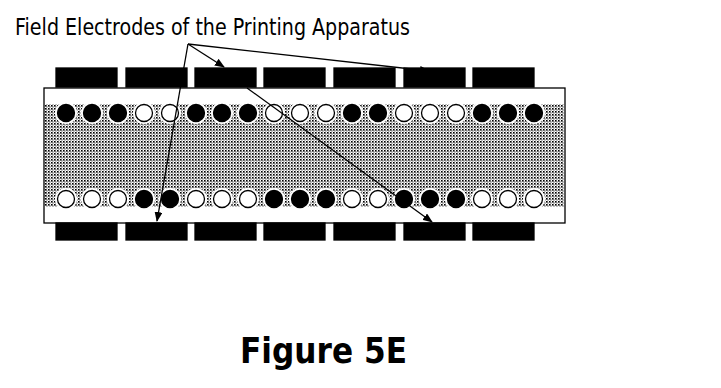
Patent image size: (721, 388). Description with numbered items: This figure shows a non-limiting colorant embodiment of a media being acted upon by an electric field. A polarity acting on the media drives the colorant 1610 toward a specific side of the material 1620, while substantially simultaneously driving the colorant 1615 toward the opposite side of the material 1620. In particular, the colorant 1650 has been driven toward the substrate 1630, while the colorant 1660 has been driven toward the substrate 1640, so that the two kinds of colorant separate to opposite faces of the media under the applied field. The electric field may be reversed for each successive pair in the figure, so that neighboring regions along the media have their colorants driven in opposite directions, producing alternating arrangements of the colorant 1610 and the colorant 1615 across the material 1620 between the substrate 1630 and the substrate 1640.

The colorant 1610 is at (551, 119).
The colorant 1615 is at (516, 204).
The material 1620 is at (538, 176).
The substrate 1630 is at (443, 106).
The substrate 1640 is at (283, 219).
The colorant 1650 is at (66, 113).
The colorant 1660 is at (101, 203).